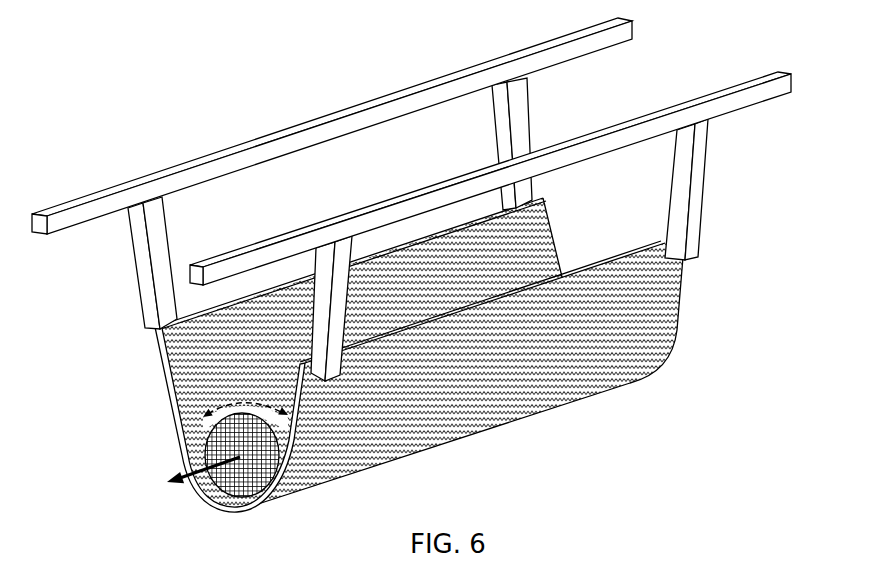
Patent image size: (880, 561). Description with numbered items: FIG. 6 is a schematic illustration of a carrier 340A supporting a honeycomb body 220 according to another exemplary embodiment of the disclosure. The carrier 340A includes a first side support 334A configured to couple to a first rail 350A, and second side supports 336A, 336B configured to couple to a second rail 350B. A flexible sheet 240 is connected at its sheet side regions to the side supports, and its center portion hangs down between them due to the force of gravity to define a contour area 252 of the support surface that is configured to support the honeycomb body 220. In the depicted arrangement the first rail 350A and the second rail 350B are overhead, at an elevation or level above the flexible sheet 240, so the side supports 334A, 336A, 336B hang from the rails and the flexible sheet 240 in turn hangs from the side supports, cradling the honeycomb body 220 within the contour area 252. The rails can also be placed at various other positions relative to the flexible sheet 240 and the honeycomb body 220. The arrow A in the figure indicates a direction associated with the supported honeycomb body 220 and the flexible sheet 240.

The carrier 340A is at (328, 58).
The first rail 350A is at (74, 214).
The second rail 350B is at (387, 216).
The first side support 334A is at (137, 262).
The second side support 336A is at (402, 329).
The second side support 336B is at (700, 212).
The flexible sheet 240 is at (508, 407).
The contour area 252 is at (222, 407).
The honeycomb body 220 is at (277, 404).
The direction of movement A is at (183, 473).